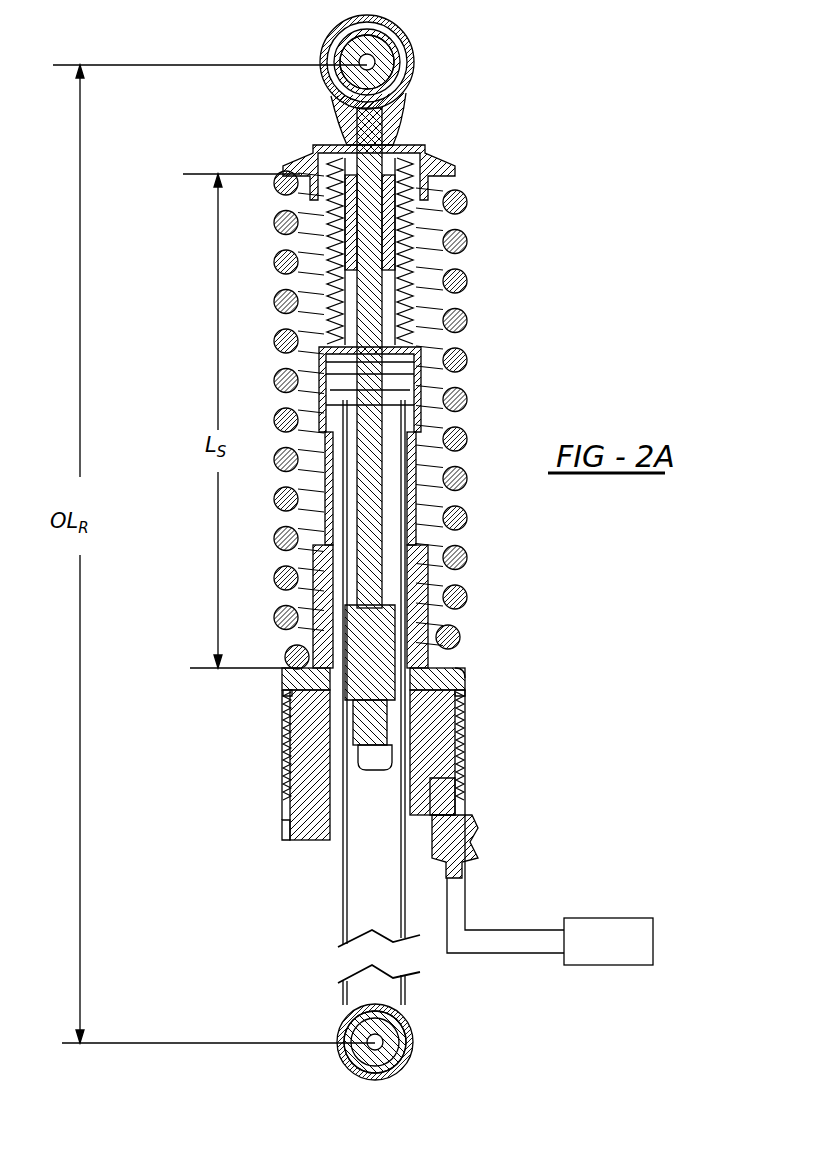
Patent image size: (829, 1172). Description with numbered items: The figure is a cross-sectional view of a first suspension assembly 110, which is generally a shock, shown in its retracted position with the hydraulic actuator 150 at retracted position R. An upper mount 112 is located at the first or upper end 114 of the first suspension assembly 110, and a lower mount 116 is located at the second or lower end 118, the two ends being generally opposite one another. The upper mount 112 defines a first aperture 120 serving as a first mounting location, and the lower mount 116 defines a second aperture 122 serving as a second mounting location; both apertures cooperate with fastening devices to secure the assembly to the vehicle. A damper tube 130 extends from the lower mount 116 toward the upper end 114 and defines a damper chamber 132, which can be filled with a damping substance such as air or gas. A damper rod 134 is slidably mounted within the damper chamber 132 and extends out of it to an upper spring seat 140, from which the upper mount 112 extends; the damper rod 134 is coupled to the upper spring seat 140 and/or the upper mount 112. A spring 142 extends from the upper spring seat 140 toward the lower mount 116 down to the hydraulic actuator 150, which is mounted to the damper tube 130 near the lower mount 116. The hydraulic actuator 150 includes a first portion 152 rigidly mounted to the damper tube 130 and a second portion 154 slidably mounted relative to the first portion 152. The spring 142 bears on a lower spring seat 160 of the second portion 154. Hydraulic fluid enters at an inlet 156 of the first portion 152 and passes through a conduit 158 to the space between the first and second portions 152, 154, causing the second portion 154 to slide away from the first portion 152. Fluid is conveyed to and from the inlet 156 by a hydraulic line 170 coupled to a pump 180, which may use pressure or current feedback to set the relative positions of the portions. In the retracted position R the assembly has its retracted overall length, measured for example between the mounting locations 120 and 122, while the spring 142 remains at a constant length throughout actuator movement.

The first suspension assembly 110 is at (624, 140).
The upper mount 112 is at (412, 57).
The upper end 114 is at (410, 38).
The first aperture 120 is at (397, 88).
The upper spring seat 140 is at (450, 160).
The spring 142 is at (467, 243).
The damper rod 134 is at (365, 447).
The lower spring seat 160 is at (455, 665).
The retracted position R is at (464, 673).
The second portion 154 is at (461, 693).
The hydraulic actuator 150 is at (476, 737).
The first portion 152 is at (418, 757).
The conduit 158 is at (440, 777).
The inlet 156 is at (455, 852).
The damper tube 130 is at (343, 913).
The damper chamber 132 is at (345, 883).
The hydraulic line 170 is at (516, 930).
The pump 180 is at (653, 940).
The second aperture 122 is at (408, 1030).
The lower mount 116 is at (378, 1040).
The lower end 118 is at (403, 1066).